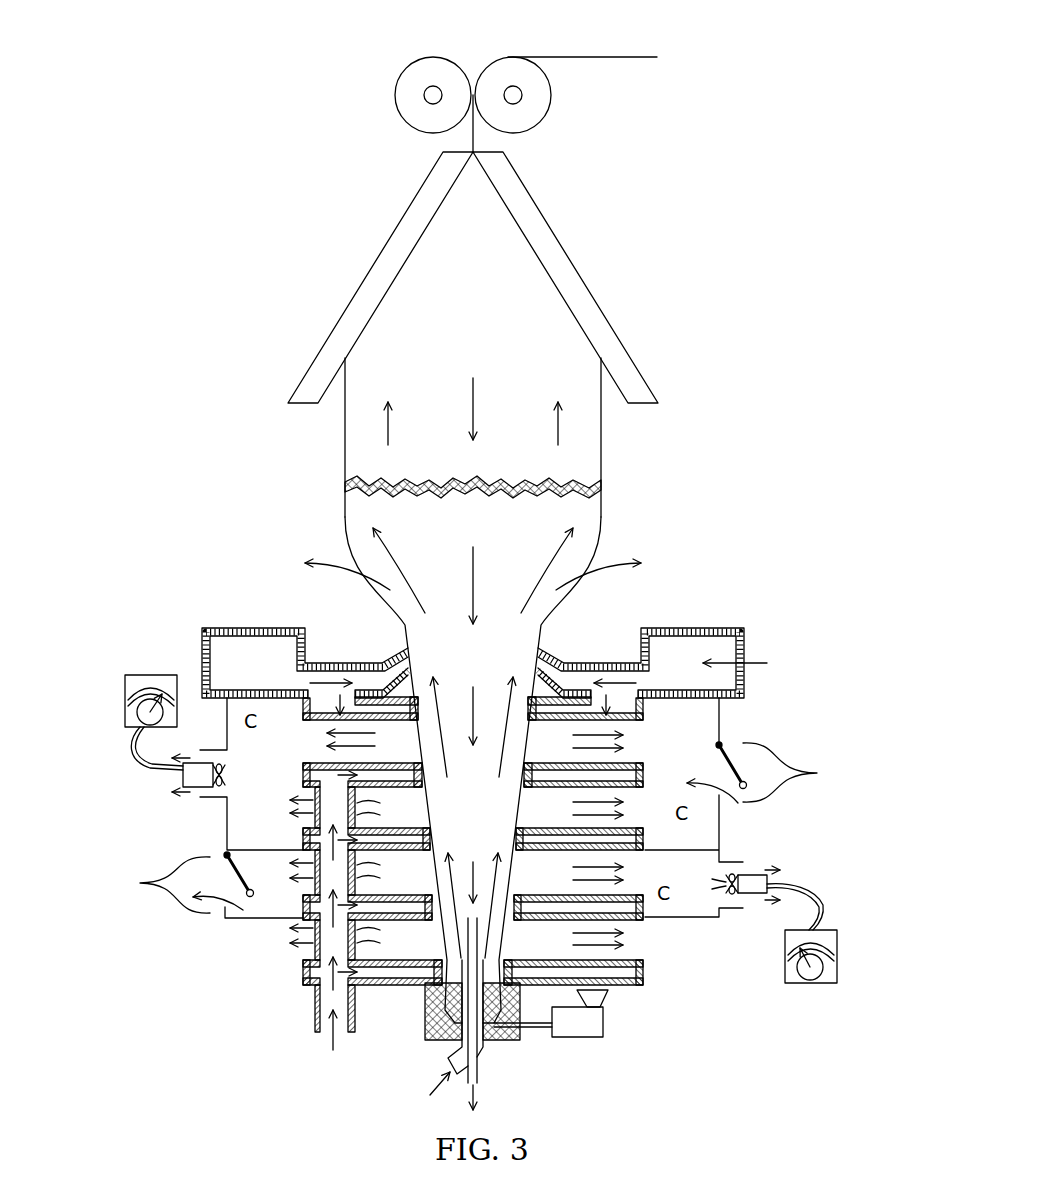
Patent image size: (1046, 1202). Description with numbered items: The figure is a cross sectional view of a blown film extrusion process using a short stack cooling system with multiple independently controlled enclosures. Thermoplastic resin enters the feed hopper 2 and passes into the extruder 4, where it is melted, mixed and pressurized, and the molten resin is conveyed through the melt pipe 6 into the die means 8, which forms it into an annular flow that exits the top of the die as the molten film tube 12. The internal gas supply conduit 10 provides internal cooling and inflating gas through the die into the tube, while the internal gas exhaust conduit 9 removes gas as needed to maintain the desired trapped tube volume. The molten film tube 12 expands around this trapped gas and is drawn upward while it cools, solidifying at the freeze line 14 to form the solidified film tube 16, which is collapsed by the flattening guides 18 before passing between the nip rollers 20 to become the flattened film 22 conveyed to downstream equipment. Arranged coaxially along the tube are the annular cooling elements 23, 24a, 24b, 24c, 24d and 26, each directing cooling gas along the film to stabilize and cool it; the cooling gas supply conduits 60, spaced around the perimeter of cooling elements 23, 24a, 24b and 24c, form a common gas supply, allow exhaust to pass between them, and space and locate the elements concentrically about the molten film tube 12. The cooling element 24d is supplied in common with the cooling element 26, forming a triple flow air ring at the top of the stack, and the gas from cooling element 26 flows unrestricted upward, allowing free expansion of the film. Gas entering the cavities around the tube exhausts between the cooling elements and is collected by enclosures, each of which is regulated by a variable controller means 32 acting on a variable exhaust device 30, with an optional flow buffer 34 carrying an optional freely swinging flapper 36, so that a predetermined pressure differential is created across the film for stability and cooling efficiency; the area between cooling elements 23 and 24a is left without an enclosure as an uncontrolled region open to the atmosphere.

The feed hopper 2 is at (600, 995).
The extruder 4 is at (587, 1027).
The melt pipe 6 is at (535, 1028).
The die means 8 is at (427, 1006).
The internal gas exhaust conduit 9 is at (477, 1073).
The internal gas supply conduit 10 is at (453, 1058).
The molten film tube 12 is at (601, 513).
The freeze line 14 is at (601, 481).
The solidified film tube 16 is at (601, 448).
The flattening guides 18 is at (362, 275).
The nip rollers 20 is at (398, 117).
The flattened film 22 is at (543, 56).
The cooling element 23 is at (628, 972).
The cooling element 24a is at (645, 917).
The cooling element 24b is at (630, 842).
The cooling element 24c is at (640, 772).
The cooling element 24d is at (635, 709).
The cooling element 26 is at (241, 650).
The variable exhaust device 30 is at (183, 786).
The variable controller means 32 is at (125, 712).
The flow buffer 34 is at (140, 883).
The freely swinging flapper 36 is at (233, 868).
The cooling gas supply conduits 60 is at (313, 953).